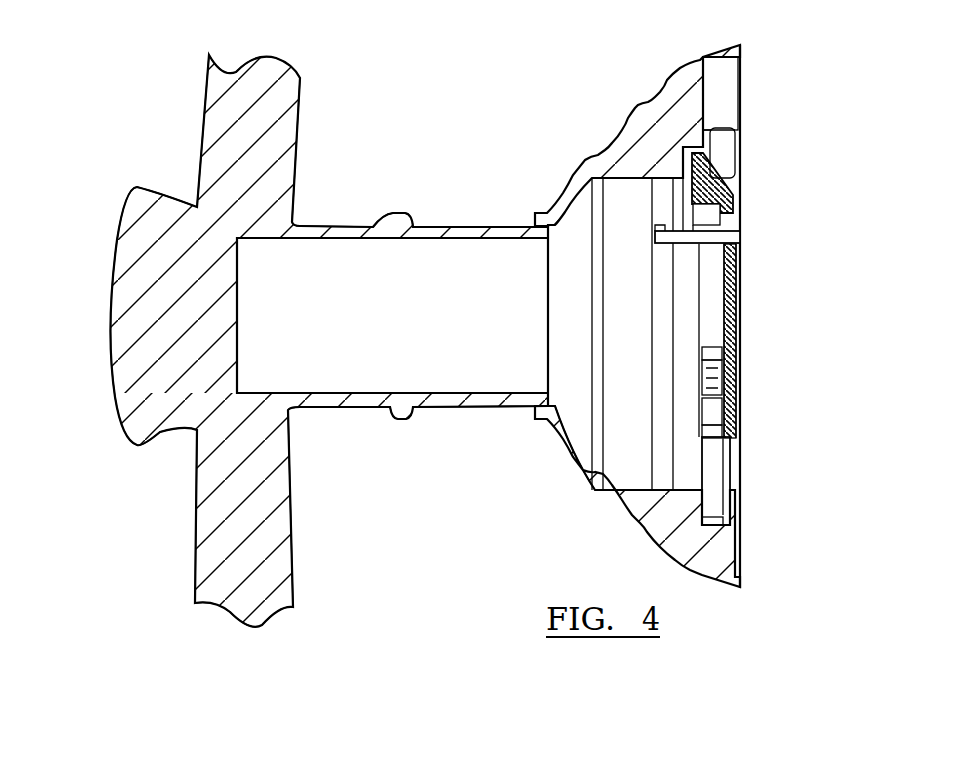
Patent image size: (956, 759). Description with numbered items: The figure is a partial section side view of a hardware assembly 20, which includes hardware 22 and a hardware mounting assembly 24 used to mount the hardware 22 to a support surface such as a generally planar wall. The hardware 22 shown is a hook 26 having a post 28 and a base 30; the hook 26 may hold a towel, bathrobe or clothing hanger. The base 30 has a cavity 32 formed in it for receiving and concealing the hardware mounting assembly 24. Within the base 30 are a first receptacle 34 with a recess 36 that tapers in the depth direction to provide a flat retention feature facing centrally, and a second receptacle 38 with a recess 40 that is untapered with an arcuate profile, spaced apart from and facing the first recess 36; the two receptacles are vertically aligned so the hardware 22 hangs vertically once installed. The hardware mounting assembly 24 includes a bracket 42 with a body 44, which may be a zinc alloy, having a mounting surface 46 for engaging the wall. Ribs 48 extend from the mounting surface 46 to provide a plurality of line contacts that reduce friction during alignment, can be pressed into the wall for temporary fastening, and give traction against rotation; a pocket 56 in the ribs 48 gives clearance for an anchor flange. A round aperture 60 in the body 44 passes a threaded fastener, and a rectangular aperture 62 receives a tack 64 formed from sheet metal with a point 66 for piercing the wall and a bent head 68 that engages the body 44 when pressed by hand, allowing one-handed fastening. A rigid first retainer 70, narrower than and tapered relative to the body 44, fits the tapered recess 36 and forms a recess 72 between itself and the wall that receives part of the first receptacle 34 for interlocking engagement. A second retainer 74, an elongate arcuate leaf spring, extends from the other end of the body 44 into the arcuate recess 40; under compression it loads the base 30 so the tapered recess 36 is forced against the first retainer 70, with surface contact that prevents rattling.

The hardware assembly 20 is at (814, 47).
The hardware 22 is at (605, 146).
The hardware mounting assembly 24 is at (749, 205).
The hook 26 is at (204, 556).
The post 28 is at (326, 407).
The base 30 is at (601, 491).
The cavity 32 is at (739, 482).
The first receptacle 34 is at (736, 168).
The recess 36 is at (736, 181).
The second receptacle 38 is at (739, 505).
The recess 40 is at (739, 520).
The bracket 42 is at (748, 353).
The body 44 is at (741, 271).
The mounting surface 46 is at (751, 396).
The ribs 48 is at (741, 416).
The pocket 56 is at (741, 313).
The round aperture 60 is at (741, 318).
The rectangular aperture 62 is at (741, 243).
The tack 64 is at (755, 236).
The point 66 is at (741, 249).
The head 68 is at (660, 231).
The first retainer 70 is at (706, 152).
The recess 72 is at (721, 175).
The second retainer 74 is at (701, 507).